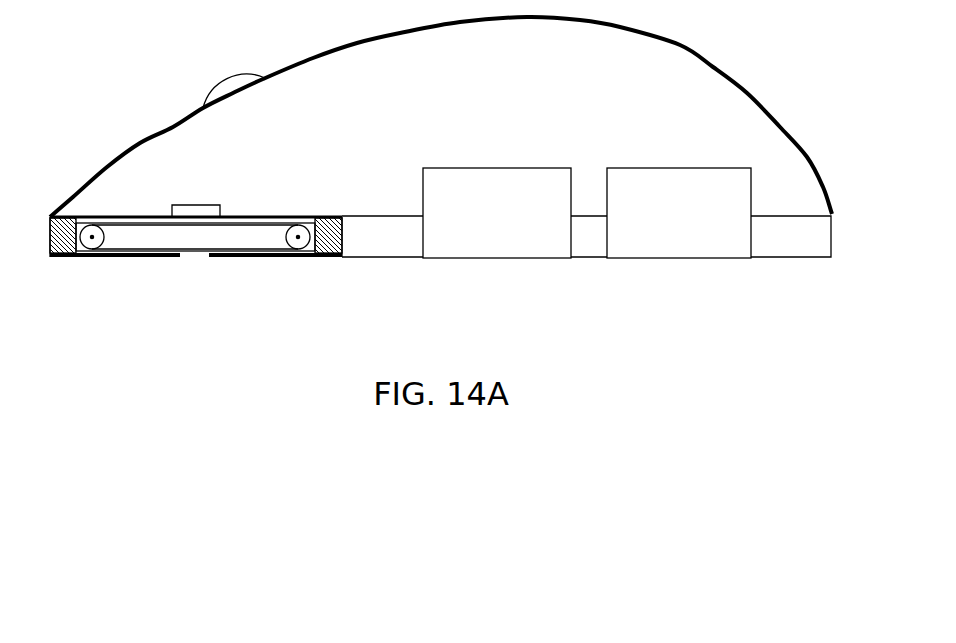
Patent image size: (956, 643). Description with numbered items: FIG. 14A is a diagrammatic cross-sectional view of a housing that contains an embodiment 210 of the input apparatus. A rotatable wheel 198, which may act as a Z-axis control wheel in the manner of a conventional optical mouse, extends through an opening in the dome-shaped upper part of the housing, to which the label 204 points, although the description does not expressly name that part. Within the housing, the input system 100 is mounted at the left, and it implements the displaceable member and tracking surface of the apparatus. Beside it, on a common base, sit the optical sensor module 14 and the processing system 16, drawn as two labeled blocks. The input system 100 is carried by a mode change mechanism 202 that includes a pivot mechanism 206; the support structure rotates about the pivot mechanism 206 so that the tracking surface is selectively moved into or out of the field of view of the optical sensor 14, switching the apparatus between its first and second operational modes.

The input apparatus 210 is at (118, 63).
The rotatable wheel 198 is at (223, 73).
The dome housing cover 204 is at (805, 148).
The pivot mechanism 206 is at (341, 258).
The optical sensor 14 is at (532, 167).
The processing system 16 is at (680, 167).
The input system 100 is at (127, 287).
The mode change mechanism 202 is at (330, 285).